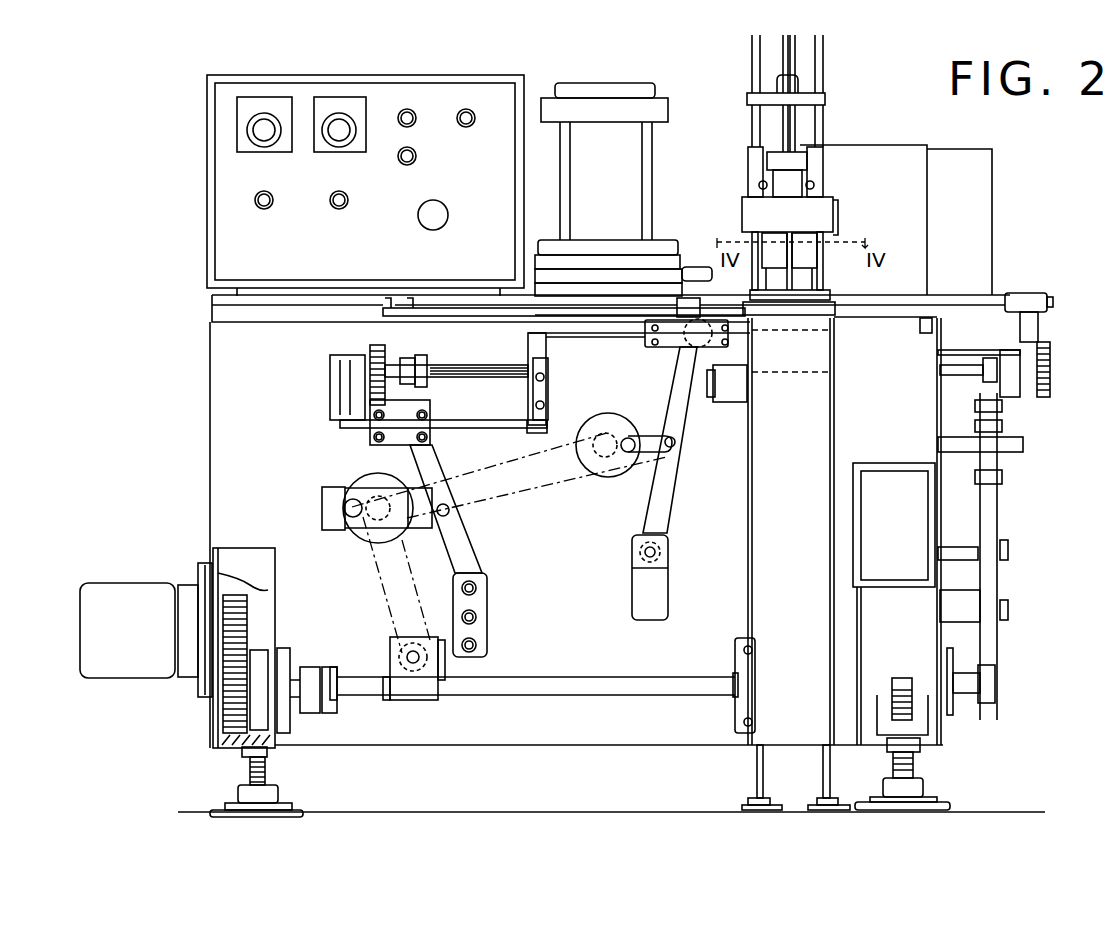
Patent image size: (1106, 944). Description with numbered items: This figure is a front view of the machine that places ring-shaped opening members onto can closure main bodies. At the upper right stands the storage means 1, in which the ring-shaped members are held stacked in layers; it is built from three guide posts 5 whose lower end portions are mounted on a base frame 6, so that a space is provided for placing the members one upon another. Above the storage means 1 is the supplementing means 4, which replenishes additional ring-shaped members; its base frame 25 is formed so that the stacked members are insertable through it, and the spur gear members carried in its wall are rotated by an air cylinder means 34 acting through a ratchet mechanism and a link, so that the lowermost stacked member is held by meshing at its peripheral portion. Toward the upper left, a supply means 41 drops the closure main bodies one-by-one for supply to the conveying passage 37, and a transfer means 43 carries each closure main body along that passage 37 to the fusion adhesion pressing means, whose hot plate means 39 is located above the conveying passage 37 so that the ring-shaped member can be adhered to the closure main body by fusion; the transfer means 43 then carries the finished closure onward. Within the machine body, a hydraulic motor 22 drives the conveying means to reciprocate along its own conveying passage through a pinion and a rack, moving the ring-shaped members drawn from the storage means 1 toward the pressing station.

The storage means 1 is at (834, 272).
The supplementing means 4 is at (738, 196).
The guide posts 5 is at (765, 244).
The base frame 6 is at (828, 302).
The hydraulic motor 22 is at (732, 404).
The base frame 25 is at (835, 210).
The air cylinder means 34 is at (795, 128).
The conveying passage 37 is at (703, 268).
The hot plate means 39 is at (762, 278).
The supply means 41 is at (666, 98).
The transfer means 43 is at (668, 347).